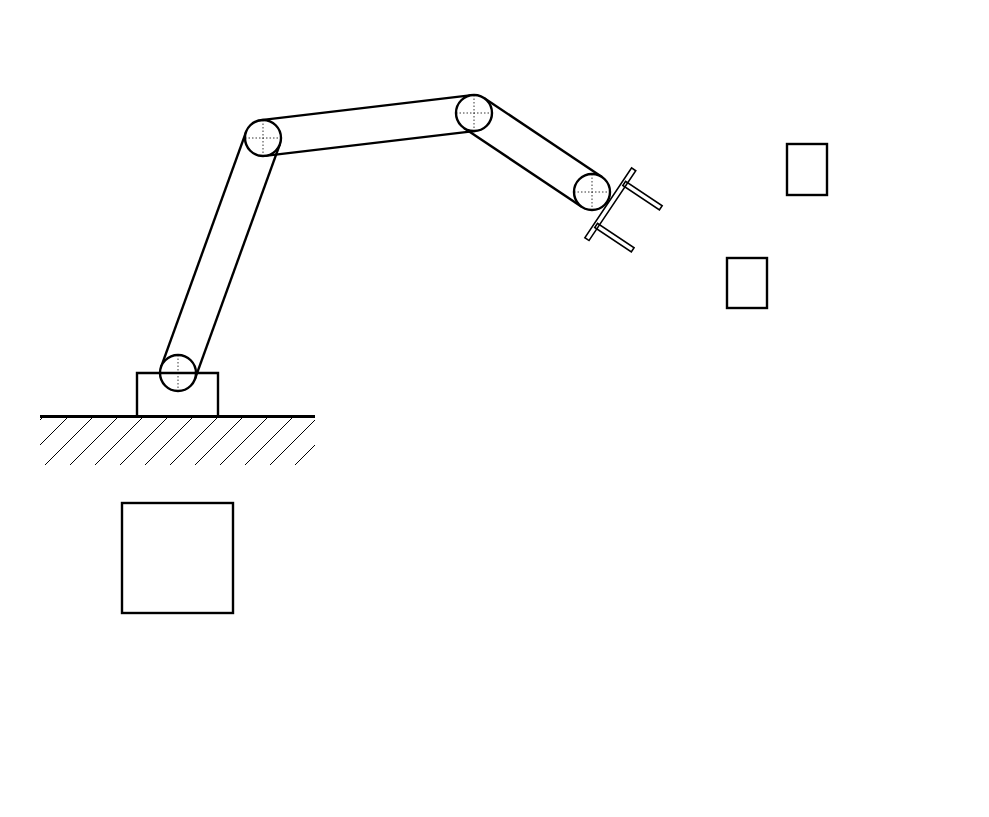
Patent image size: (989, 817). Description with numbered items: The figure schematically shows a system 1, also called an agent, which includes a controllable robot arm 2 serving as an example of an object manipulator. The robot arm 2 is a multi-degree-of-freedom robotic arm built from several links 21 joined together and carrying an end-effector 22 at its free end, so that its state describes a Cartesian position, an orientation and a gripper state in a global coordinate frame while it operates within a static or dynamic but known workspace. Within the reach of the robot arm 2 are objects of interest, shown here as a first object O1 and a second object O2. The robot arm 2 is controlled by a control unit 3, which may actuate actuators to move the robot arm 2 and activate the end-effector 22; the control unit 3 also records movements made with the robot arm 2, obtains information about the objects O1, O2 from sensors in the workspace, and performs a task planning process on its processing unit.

The system 1 is at (777, 90).
The robot arm 2 is at (450, 90).
The links 21 is at (366, 109).
The end-effector 22 is at (647, 190).
The control unit 3 is at (187, 572).
The object of interest O1 is at (745, 309).
The object of interest O2 is at (806, 196).